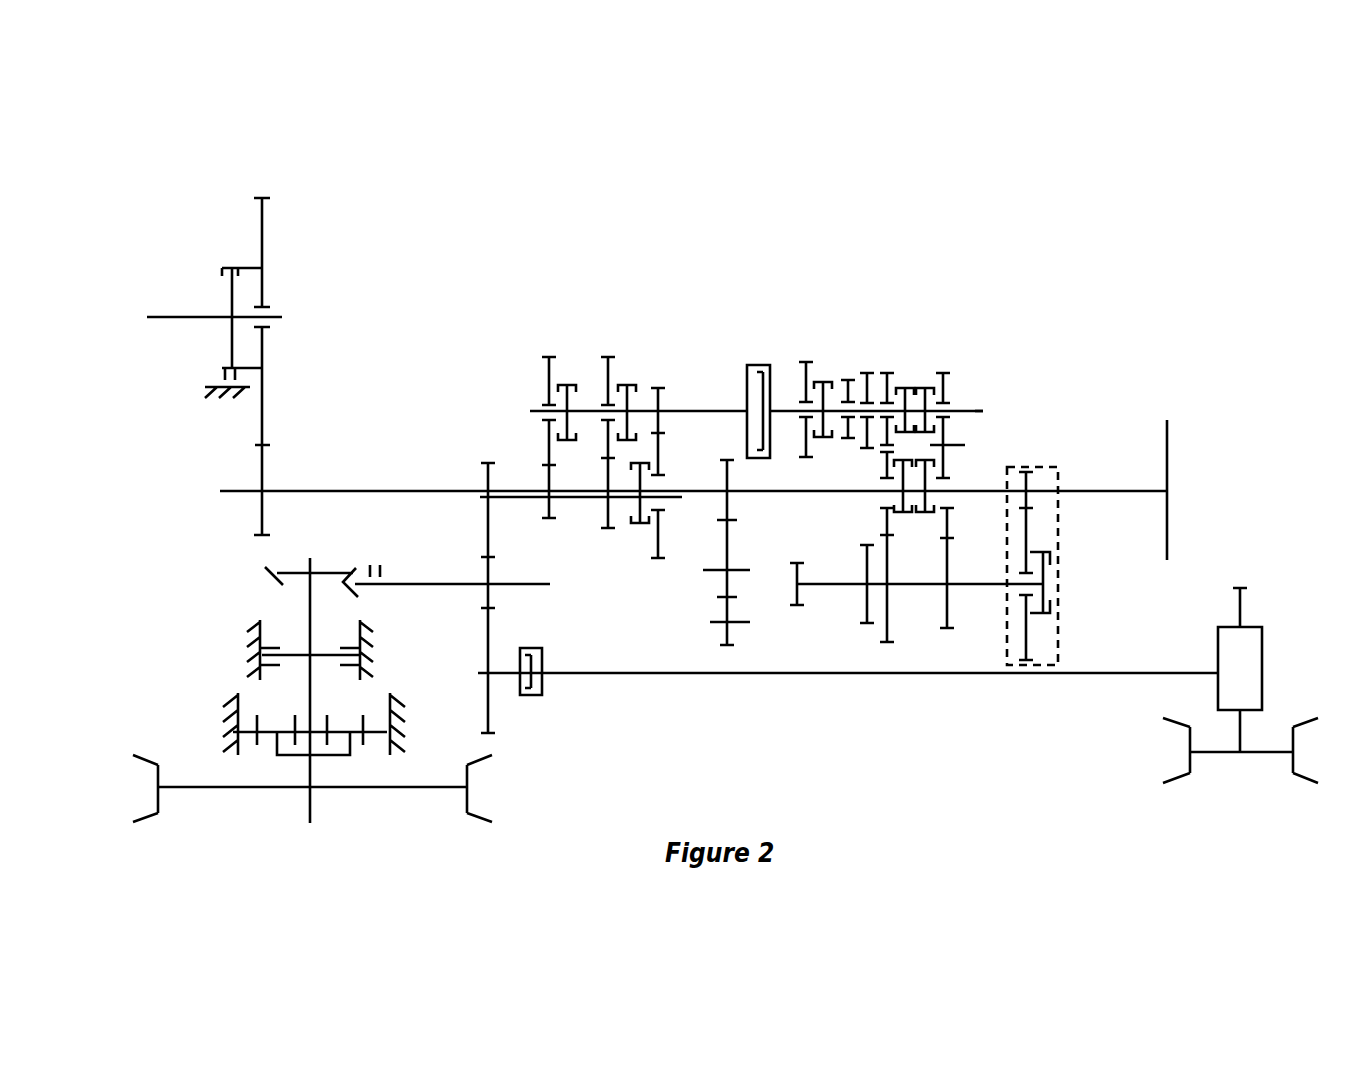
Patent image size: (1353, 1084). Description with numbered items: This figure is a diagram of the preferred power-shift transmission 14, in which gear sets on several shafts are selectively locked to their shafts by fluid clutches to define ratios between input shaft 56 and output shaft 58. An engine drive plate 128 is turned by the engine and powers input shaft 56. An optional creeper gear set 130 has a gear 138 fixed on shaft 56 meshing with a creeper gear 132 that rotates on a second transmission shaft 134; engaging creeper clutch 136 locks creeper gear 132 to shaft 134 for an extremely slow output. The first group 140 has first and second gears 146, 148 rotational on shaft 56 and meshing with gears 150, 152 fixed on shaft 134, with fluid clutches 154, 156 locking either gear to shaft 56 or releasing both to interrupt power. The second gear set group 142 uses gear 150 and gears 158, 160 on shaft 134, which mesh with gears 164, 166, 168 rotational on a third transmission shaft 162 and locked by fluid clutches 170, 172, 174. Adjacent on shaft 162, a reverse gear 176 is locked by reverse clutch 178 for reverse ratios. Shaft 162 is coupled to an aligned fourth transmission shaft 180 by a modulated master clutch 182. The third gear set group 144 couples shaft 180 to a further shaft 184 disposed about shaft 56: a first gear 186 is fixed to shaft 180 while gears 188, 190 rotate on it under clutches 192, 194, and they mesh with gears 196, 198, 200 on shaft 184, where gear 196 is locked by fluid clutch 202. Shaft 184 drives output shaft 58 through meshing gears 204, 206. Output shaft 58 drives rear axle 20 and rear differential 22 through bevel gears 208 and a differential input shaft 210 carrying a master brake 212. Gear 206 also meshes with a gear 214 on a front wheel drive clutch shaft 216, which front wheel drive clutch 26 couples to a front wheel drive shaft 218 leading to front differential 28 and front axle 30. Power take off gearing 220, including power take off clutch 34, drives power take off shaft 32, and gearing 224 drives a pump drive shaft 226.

The transmission 14 is at (845, 785).
The rear axle 20 is at (367, 790).
The rear differential 22 is at (295, 725).
The front wheel drive engagement system 26 is at (542, 683).
The front differential 28 is at (1262, 650).
The front axle 30 is at (1260, 752).
The power take off shaft 32 is at (172, 317).
The power take off clutch 34 is at (232, 267).
The transmission input shaft 56 is at (1098, 490).
The transmission output shaft 58 is at (418, 585).
The engine drive plate 128 is at (1167, 455).
The creeper gear set 130 is at (1058, 650).
The creeper gear 132 is at (1043, 620).
The second transmission shaft 134 is at (977, 585).
The creeper clutch 136 is at (1050, 552).
The gear 138 is at (1028, 472).
The first group of gear sets 140 is at (835, 658).
The second gear set group 142 is at (1010, 305).
The third gear set group 144 is at (637, 320).
The first gear 146 is at (885, 525).
The second gear 148 is at (950, 530).
The gear 150 is at (887, 600).
The gear 152 is at (945, 597).
The fluid clutch 154 is at (903, 515).
The fluid clutch 156 is at (945, 545).
The gear 158 is at (797, 593).
The gear 160 is at (866, 600).
The third transmission shaft 162 is at (968, 409).
The gear 164 is at (806, 362).
The gear 166 is at (867, 373).
The gear 168 is at (887, 373).
The fluid clutch 170 is at (823, 382).
The fluid clutch 172 is at (848, 380).
The fluid clutch 174 is at (905, 388).
The reverse gear 176 is at (943, 373).
The reverse clutch 178 is at (925, 388).
The fourth transmission shaft 180 is at (683, 410).
The master clutch 182 is at (757, 365).
The further shaft 184 is at (520, 487).
The first gear 186 is at (660, 433).
The gear 188 is at (606, 357).
The gear 190 is at (546, 357).
The clutch 192 is at (627, 385).
The clutch 194 is at (567, 385).
The gear 196 is at (657, 560).
The gear 198 is at (607, 528).
The gear 200 is at (549, 518).
The fluid clutch 202 is at (640, 523).
The gear 204 is at (483, 490).
The gear 206 is at (488, 568).
The bevel gears 208 is at (350, 573).
The differential input shaft 210 is at (310, 608).
The master brake 212 is at (310, 650).
The gear 214 is at (490, 625).
The front wheel drive clutch shaft 216 is at (505, 675).
The front wheel drive shaft 218 is at (705, 673).
The power take off gearing 220 is at (317, 327).
The gearing 224 is at (702, 562).
The pump drive shaft 226 is at (712, 625).